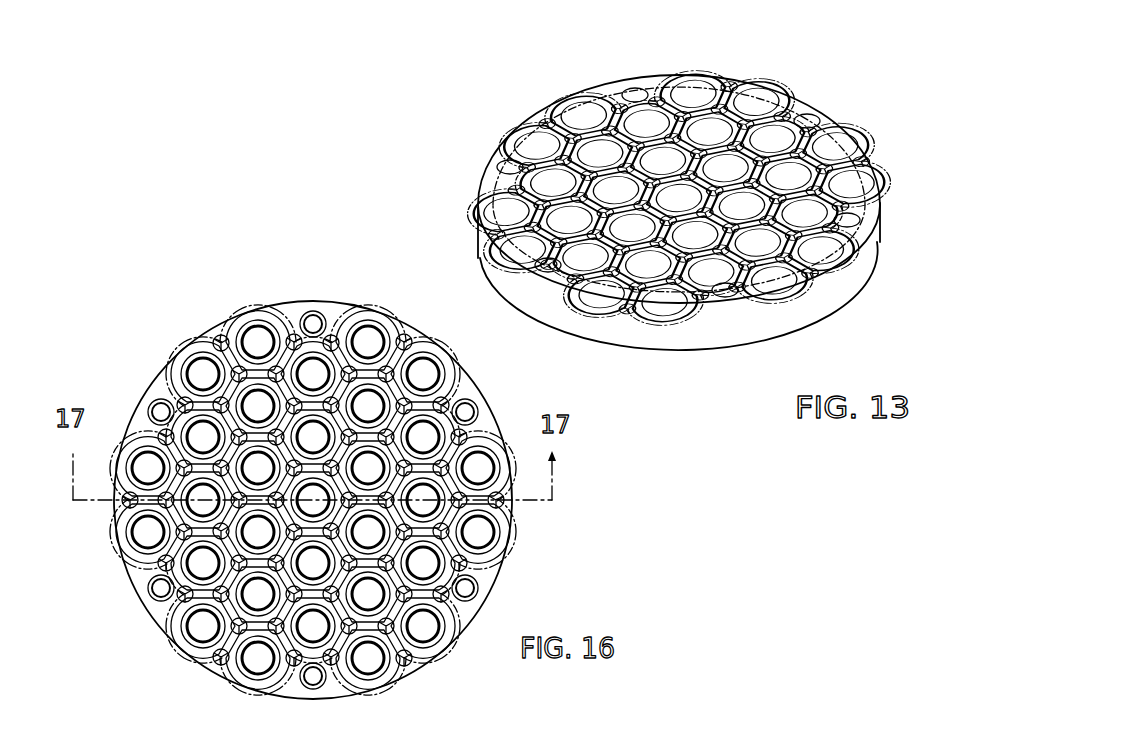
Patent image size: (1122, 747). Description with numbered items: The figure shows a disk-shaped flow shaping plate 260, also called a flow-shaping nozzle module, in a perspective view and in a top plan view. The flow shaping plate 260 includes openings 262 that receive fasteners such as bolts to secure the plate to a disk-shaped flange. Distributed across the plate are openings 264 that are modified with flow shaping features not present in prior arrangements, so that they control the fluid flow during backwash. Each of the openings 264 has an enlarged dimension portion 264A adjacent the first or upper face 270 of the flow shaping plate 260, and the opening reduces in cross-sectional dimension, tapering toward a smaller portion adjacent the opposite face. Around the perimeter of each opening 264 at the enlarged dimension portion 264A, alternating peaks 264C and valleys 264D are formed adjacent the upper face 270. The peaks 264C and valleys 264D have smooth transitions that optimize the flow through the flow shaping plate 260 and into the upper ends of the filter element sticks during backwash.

In FIG. 16, the flow shaping plate 260 is at (137, 600).
In FIG. 13, the flow shaping plate 260 is at (445, 202).
In FIG. 13, the openings 262 is at (632, 90).
In FIG. 16, the openings 264 is at (533, 533).
In FIG. 16, the enlarged dimension portion 264A is at (245, 318).
In FIG. 13, the enlarged dimension portion 264A is at (530, 130).
In FIG. 13, the peaks 264C is at (683, 297).
In FIG. 13, the valleys 264D is at (760, 120).
In FIG. 16, the upper face 270 is at (467, 393).
In FIG. 13, the upper face 270 is at (798, 108).